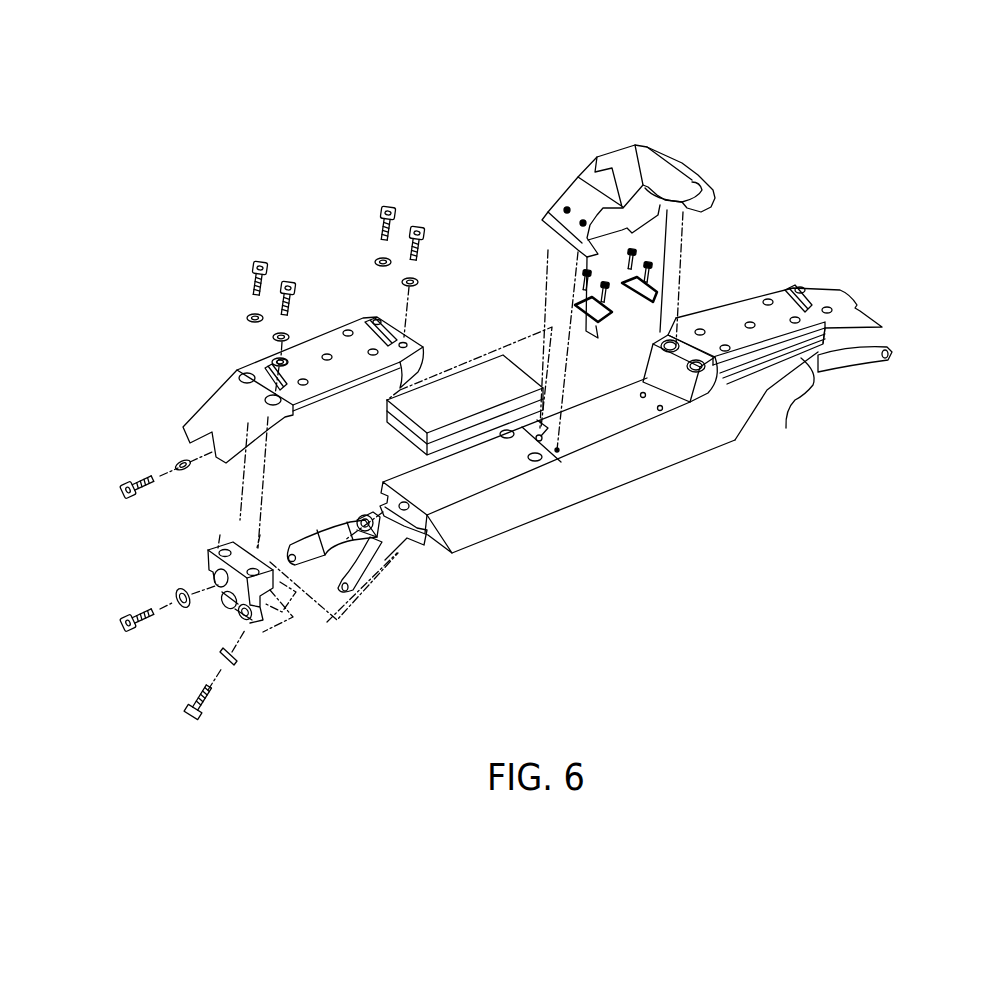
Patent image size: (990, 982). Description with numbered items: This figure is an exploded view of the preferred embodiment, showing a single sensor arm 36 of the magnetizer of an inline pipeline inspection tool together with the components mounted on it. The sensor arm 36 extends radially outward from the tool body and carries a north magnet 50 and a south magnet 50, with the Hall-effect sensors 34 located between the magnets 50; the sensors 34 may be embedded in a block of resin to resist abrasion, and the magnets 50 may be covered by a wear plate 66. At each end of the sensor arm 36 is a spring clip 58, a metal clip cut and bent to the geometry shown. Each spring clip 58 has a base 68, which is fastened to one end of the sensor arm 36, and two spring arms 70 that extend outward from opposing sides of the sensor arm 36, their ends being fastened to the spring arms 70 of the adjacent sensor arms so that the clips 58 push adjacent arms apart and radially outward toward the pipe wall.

The Hall-effect sensor 34 is at (615, 145).
The sensor arm 36 is at (646, 480).
The magnet 50 is at (462, 362).
The spring clip 58 is at (397, 571).
The wear plate 66 is at (205, 393).
The base 68 is at (378, 515).
The spring arm 70 is at (297, 557).